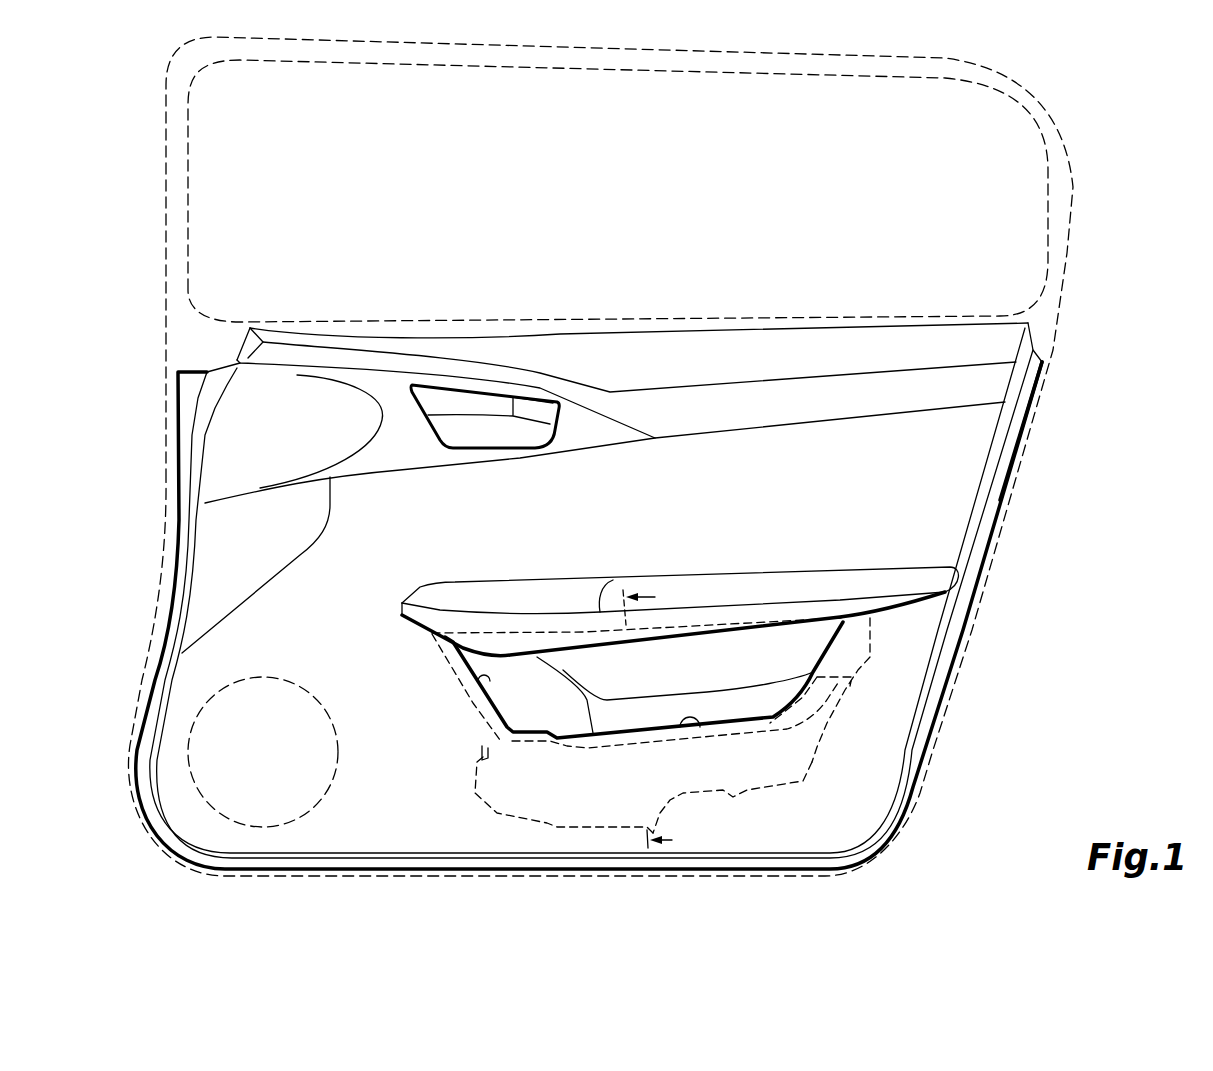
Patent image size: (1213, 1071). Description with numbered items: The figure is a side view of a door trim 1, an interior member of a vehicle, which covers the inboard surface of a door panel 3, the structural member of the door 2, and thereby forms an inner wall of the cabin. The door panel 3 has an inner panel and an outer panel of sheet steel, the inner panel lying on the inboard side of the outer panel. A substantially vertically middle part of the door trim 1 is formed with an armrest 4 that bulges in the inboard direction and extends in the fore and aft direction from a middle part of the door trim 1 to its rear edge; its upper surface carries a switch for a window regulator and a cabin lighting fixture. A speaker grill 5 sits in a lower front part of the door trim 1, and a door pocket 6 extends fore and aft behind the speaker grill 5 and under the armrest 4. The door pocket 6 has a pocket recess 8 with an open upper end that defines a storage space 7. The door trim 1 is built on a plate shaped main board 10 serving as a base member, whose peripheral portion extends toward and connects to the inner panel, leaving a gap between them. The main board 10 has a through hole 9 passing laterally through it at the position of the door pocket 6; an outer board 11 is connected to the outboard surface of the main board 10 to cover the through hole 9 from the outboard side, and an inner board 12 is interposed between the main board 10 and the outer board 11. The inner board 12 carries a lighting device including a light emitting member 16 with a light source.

The door trim 1 is at (622, 328).
The door 2 is at (1095, 181).
The door panel 3 is at (1045, 401).
The armrest 4 is at (813, 583).
The speaker grill 5 is at (255, 828).
The door pocket 6 is at (848, 649).
The storage space 7 is at (726, 713).
The pocket recess 8 is at (690, 730).
The through hole 9 is at (478, 681).
The main board 10 is at (452, 820).
The outer board 11 is at (858, 670).
The inner board 12 is at (768, 790).
The light emitting member 16 is at (483, 748).